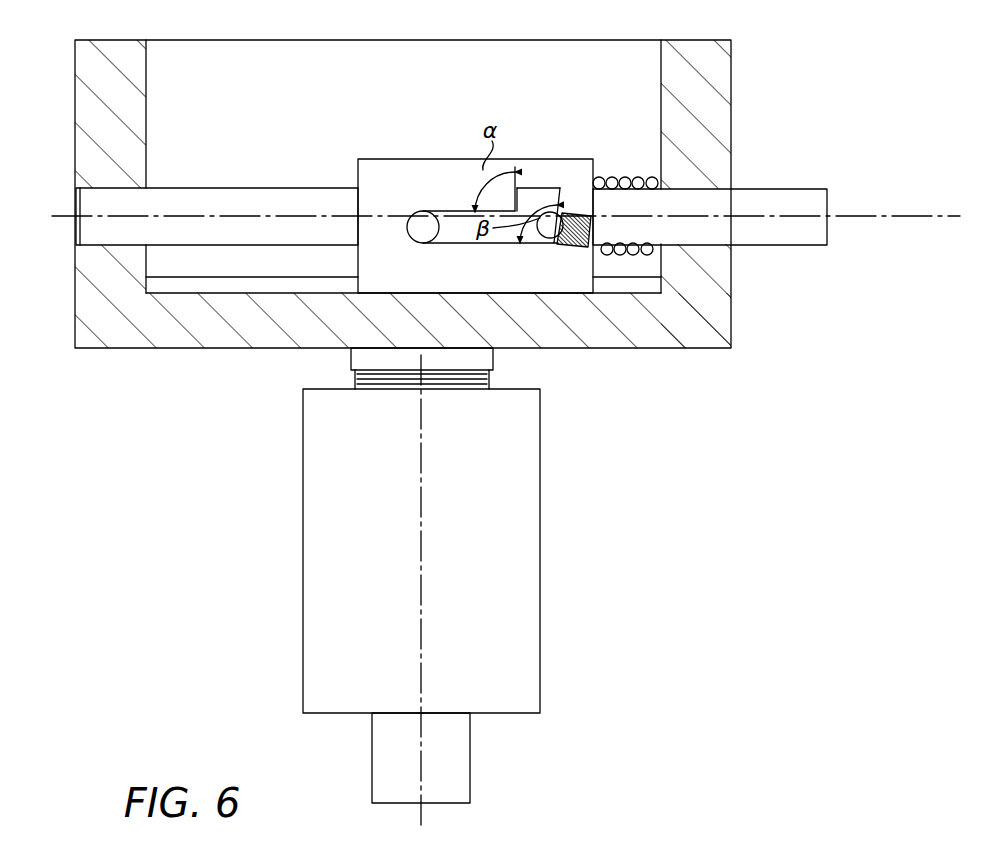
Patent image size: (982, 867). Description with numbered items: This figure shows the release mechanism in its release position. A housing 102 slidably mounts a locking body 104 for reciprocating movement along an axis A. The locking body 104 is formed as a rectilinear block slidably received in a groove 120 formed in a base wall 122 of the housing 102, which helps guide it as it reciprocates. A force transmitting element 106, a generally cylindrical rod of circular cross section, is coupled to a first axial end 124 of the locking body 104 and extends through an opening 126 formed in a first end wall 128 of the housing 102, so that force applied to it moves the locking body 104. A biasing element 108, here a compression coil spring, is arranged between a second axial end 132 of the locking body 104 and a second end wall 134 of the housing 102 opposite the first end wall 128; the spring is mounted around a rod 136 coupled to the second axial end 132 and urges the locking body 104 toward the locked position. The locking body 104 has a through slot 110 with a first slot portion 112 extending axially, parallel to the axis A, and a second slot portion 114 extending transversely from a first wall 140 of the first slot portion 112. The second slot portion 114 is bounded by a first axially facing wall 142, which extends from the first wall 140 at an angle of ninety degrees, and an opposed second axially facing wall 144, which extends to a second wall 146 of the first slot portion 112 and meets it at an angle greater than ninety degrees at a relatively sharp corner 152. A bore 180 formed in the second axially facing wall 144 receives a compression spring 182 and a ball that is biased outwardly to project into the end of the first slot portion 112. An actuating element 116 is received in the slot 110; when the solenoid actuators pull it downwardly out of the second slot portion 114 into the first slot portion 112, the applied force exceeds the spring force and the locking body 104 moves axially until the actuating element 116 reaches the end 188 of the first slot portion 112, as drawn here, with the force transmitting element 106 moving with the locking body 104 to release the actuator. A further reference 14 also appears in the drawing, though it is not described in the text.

The housing 102 is at (404, 219).
The locking body 104 is at (358, 173).
The force transmitting element 106 is at (424, 192).
The biasing element 108 is at (643, 256).
The slot 110 is at (535, 248).
The first slot section 112 is at (489, 212).
The second slot section 114 is at (558, 187).
The actuating element 116 is at (418, 223).
The groove 120 is at (251, 321).
The base wall 122 is at (229, 342).
The first axial end 124 is at (357, 262).
The opening 126 is at (100, 186).
The first end wall 128 is at (80, 82).
The second axial end 132 is at (598, 265).
The second end wall 134 is at (722, 276).
The rod 136 is at (812, 188).
The first wall 140 is at (440, 211).
The first axially facing wall 142 is at (538, 185).
The second axially facing wall 144 is at (593, 164).
The second wall 146 is at (457, 245).
The corner 152 is at (560, 246).
The bore 180 is at (593, 212).
The compression spring 182 is at (545, 224).
The end of the first slot portion 188 is at (406, 229).
The actuating element 14 is at (518, 188).
The axis A is at (925, 216).